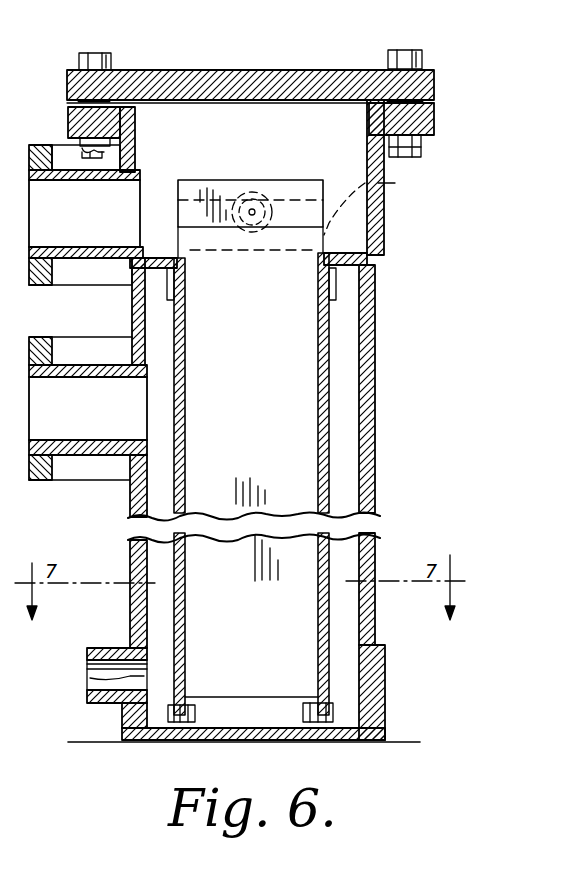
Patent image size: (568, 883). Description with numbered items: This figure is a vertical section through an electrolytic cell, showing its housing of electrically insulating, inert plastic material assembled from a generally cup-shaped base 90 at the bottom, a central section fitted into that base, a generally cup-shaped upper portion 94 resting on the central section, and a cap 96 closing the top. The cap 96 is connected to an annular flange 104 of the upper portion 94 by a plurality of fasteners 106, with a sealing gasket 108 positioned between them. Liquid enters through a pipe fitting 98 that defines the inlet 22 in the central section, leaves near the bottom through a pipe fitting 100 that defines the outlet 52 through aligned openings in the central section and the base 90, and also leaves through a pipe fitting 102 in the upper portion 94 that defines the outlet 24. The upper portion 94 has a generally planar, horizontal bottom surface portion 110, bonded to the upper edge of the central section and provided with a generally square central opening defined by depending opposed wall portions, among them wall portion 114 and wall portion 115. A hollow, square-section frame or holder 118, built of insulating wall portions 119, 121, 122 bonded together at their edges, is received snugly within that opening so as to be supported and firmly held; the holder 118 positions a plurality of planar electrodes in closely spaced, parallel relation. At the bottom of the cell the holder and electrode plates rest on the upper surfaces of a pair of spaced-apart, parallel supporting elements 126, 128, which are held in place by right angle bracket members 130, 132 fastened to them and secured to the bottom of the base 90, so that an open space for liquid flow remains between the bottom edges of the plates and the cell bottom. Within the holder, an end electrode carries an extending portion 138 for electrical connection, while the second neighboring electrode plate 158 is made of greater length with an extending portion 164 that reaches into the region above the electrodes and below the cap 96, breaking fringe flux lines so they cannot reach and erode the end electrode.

The inlet 22 is at (146, 408).
The outlet 24 is at (138, 224).
The outlet 52 is at (86, 674).
The base 90 is at (378, 697).
The upper portion 94 is at (384, 205).
The cap 96 is at (266, 70).
The pipe fitting 98 is at (46, 378).
The pipe fitting 100 is at (108, 648).
The pipe fitting 102 is at (46, 180).
The annular flange 104 is at (66, 122).
The fasteners 106 is at (104, 52).
The sealing gasket 108 is at (114, 70).
The bottom surface portion 110 is at (159, 244).
The wall portion 114 is at (167, 287).
The wall portion 115 is at (336, 285).
The frame or holder 118 is at (334, 362).
The wall portion 119 is at (405, 183).
The wall portion 121 is at (175, 552).
The wall portion 122 is at (330, 325).
The supporting element 126 is at (222, 740).
The supporting element 128 is at (304, 702).
The right angle bracket member 130 is at (170, 716).
The right angle bracket member 132 is at (383, 672).
The extending portion 138 is at (284, 190).
The electrode plate 158 is at (274, 534).
The extending portion 164 is at (220, 180).